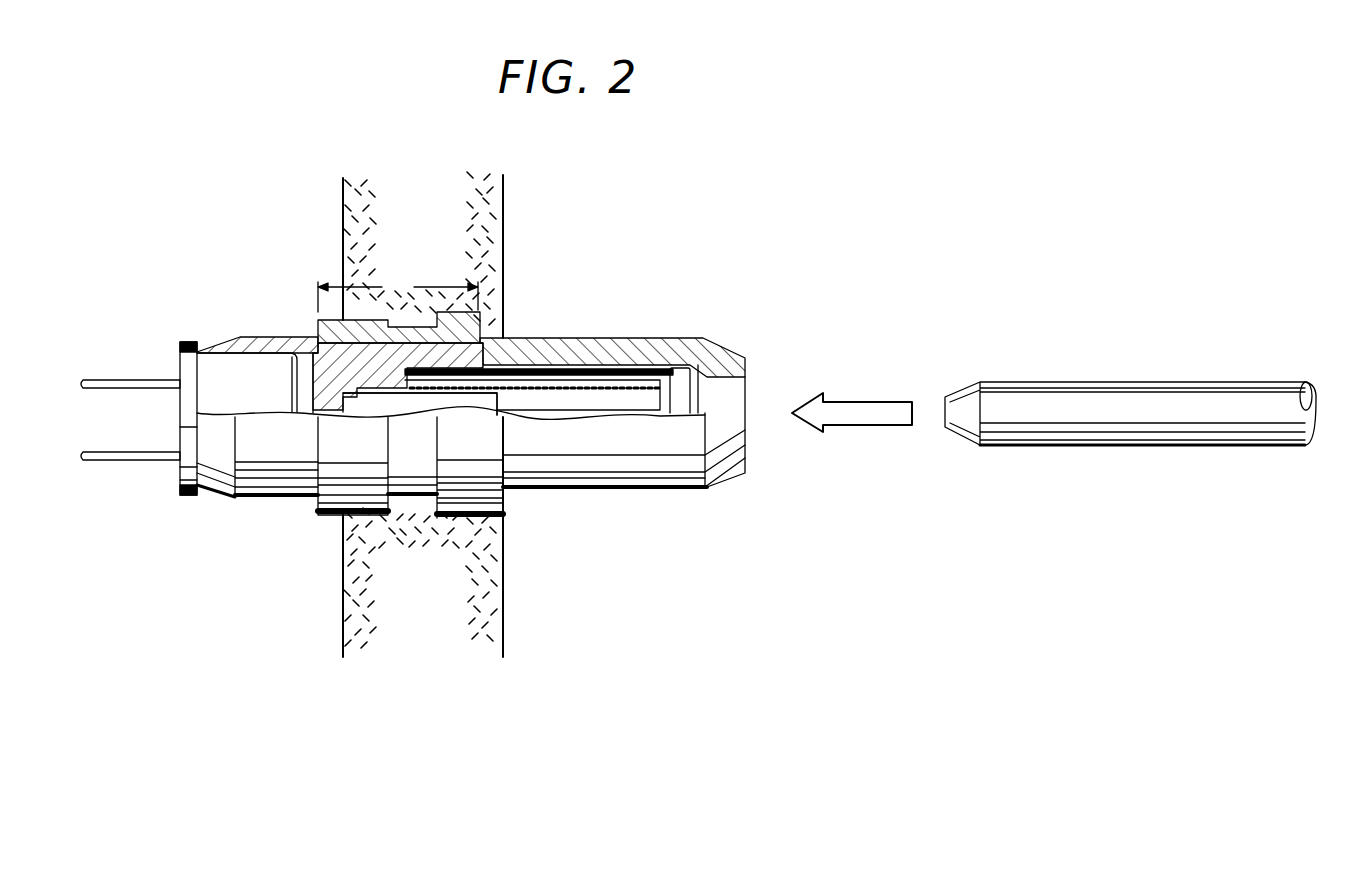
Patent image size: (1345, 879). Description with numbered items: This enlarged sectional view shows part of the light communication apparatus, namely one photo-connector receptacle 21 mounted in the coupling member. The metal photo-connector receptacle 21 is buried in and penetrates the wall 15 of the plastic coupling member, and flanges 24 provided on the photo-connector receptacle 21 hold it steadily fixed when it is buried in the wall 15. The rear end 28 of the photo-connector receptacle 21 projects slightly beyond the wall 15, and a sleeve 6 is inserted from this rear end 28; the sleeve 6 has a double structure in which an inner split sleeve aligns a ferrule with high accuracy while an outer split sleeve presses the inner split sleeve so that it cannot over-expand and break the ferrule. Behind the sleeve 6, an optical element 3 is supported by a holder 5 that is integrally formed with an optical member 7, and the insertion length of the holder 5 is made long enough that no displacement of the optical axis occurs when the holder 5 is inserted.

The optical element 3 is at (252, 382).
The holder 5 is at (287, 463).
The sleeve 6 is at (642, 387).
The optical member 7 is at (518, 405).
The wall 15 is at (455, 223).
The photo-connector receptacle 21 is at (588, 460).
The flange 24 is at (363, 513).
The rear end 28 is at (317, 334).